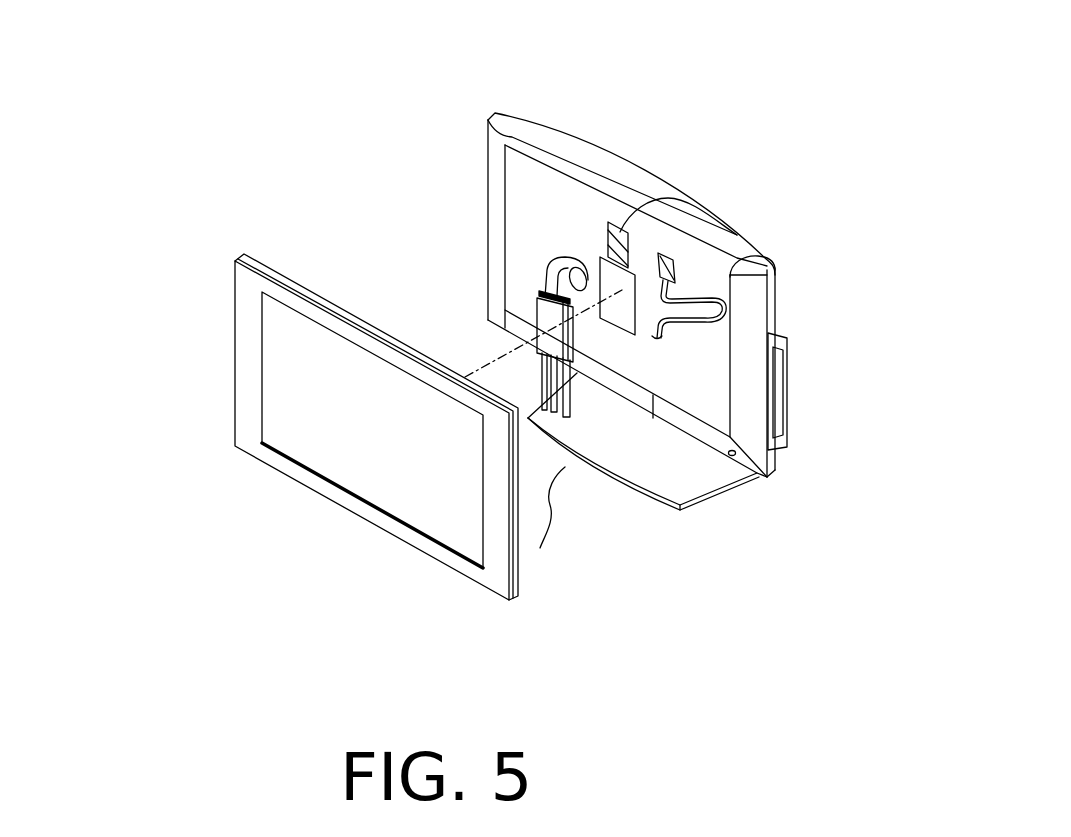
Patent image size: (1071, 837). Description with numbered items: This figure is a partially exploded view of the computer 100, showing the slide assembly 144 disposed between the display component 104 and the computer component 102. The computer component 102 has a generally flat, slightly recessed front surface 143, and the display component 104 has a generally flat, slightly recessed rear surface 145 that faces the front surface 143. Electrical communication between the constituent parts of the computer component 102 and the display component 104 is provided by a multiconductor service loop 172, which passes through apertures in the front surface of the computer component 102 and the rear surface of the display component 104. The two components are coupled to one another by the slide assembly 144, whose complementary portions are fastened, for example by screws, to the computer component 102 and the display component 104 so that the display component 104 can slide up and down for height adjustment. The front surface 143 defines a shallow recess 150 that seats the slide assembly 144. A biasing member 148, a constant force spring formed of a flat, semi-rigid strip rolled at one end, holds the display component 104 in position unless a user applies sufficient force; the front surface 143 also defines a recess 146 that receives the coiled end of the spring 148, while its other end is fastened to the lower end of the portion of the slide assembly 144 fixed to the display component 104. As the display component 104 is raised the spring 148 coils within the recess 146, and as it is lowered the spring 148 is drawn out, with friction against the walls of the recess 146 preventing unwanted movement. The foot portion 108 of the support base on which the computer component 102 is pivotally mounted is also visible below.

The computer 100 is at (210, 110).
The computer component 102 is at (570, 142).
The display component 104 is at (255, 313).
The foot portion 108 is at (668, 489).
The front surface 143 is at (578, 230).
The slide assembly 144 is at (500, 348).
The rear surface 145 is at (282, 270).
The recess 146 is at (700, 290).
The biasing member 148 is at (555, 258).
The shallow recess 150 is at (619, 316).
The multiconductor service loop 172 is at (770, 258).